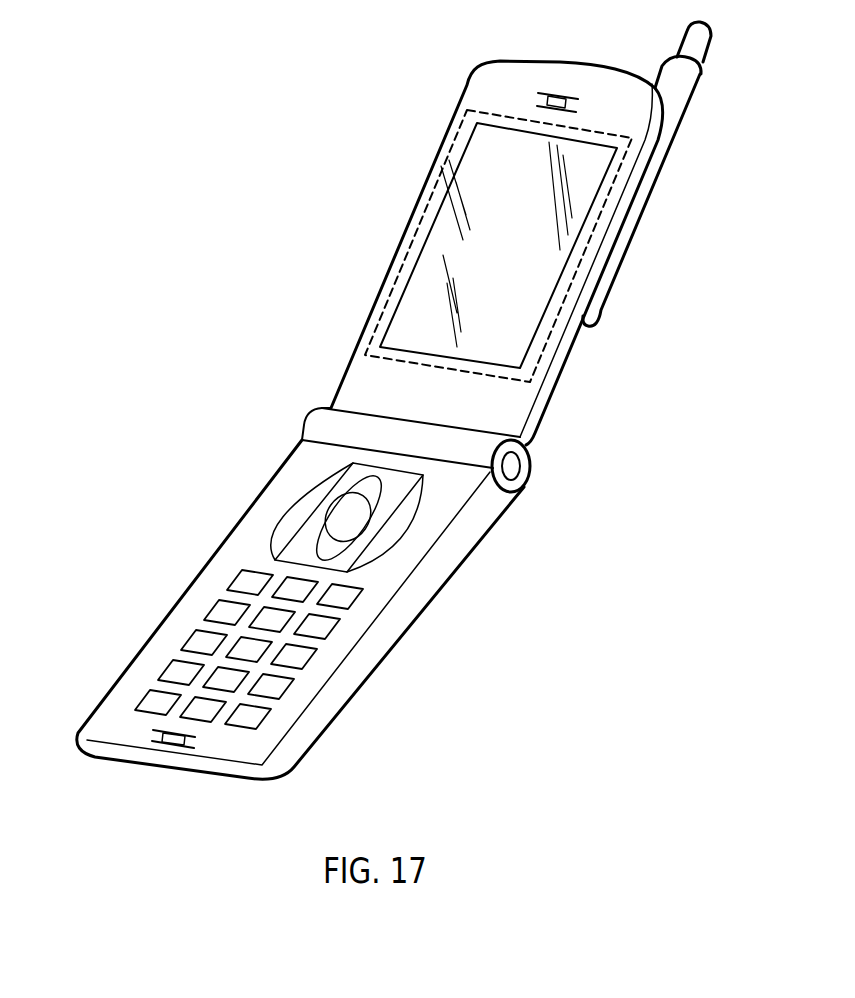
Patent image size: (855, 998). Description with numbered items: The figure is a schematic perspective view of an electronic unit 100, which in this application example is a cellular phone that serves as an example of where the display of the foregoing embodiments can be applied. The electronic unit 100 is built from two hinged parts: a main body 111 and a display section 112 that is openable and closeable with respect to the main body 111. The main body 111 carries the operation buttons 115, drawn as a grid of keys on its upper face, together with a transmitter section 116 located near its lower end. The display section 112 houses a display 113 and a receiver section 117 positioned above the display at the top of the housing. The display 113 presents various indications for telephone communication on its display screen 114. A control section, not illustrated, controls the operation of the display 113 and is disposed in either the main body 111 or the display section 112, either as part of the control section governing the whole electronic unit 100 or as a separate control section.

The electronic unit 100 is at (400, 57).
The main body 111 is at (273, 433).
The display section 112 is at (745, 48).
The display 113 is at (412, 226).
The display screen 114 is at (610, 160).
The operation buttons 115 is at (198, 711).
The transmitter section 116 is at (168, 748).
The receiver section 117 is at (552, 93).